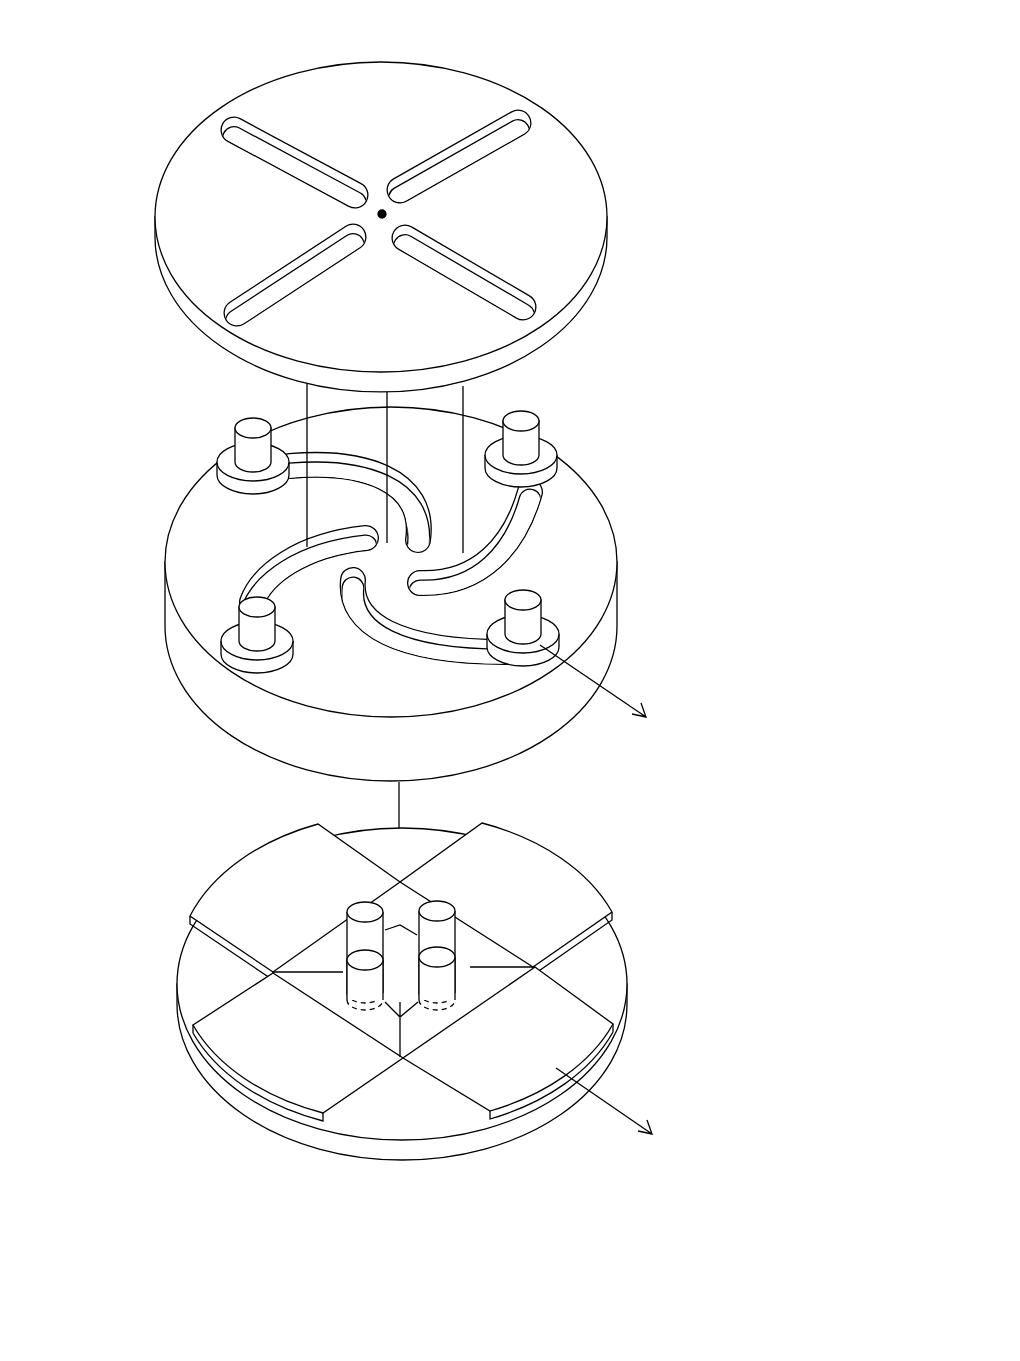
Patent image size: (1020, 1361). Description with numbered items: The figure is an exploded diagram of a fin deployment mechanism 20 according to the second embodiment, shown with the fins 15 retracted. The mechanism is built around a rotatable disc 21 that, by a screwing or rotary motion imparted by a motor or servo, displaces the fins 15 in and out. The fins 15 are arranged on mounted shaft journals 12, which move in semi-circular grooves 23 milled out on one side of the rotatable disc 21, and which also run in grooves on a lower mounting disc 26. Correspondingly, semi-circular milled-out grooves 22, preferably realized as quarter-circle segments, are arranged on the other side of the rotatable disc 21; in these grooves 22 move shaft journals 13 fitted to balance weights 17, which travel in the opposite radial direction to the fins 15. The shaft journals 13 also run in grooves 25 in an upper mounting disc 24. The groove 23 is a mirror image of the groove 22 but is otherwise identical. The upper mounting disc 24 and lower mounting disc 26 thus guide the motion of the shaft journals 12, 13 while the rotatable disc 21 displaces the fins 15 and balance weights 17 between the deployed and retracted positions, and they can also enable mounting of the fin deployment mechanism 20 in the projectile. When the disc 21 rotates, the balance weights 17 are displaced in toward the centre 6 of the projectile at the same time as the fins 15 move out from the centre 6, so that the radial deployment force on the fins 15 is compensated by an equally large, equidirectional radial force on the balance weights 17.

The centre 6 is at (382, 214).
The shaft journals 12 is at (437, 911).
The shaft journals 13 is at (521, 421).
The fins 15 is at (560, 888).
The balance weights 17 is at (545, 442).
The fin deployment mechanism 20 is at (106, 50).
The rotatable disc 21 is at (586, 645).
The grooves 22 is at (525, 517).
The grooves 23 is at (446, 550).
The upper mounting disc 24 is at (553, 215).
The grooves 25 is at (265, 140).
The lower mounting disc 26 is at (593, 960).